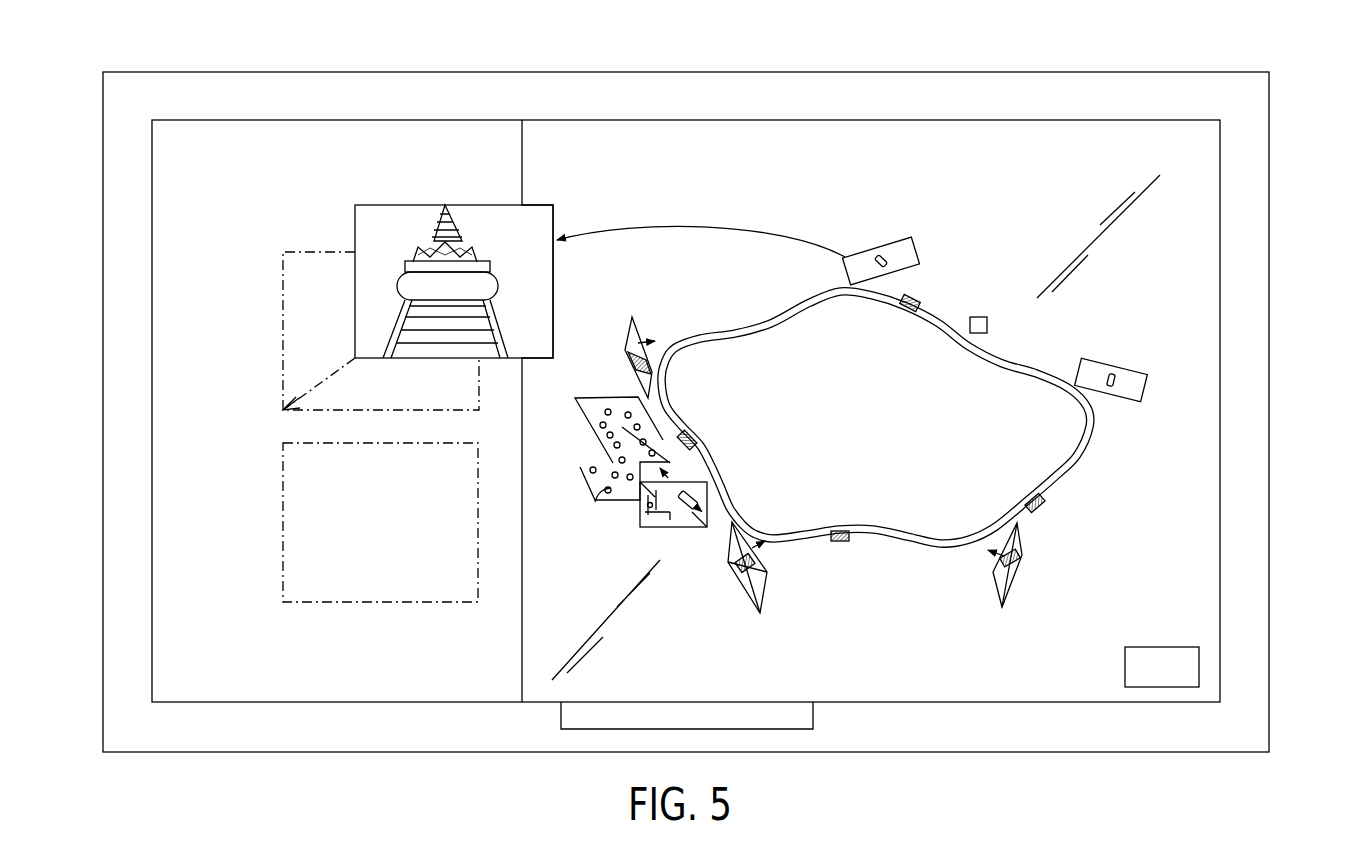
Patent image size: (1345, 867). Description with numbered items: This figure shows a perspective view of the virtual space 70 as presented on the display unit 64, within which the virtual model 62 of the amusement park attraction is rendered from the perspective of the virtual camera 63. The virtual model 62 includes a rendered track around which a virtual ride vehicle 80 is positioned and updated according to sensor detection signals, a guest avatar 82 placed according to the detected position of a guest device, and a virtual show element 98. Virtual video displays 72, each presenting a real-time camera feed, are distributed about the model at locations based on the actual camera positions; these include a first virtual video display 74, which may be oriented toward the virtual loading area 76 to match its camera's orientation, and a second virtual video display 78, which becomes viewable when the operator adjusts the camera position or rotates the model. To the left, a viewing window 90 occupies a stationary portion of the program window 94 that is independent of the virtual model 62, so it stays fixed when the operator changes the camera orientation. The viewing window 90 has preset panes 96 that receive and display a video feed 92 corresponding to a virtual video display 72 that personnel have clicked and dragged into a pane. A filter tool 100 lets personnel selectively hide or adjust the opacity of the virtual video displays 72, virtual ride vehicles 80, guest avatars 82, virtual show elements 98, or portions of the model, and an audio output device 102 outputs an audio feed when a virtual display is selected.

The virtual model 62 is at (1015, 183).
The virtual camera 63 is at (686, 351).
The display unit 64 is at (750, 120).
The virtual space 70 is at (595, 153).
The virtual video display 72 is at (878, 248).
The first virtual video display 74 is at (745, 588).
The virtual loading area 76 is at (640, 357).
The second virtual video display 78 is at (1015, 580).
The virtual ride vehicle 80 is at (843, 543).
The guest avatar 82 is at (595, 500).
The viewing window 90 is at (215, 150).
The video feed 92 is at (385, 222).
The program window 94 is at (1182, 282).
The preset pane 96 is at (317, 325).
The virtual show element 98 is at (980, 316).
The filter tool 100 is at (1125, 665).
The audio output device 102 is at (773, 713).